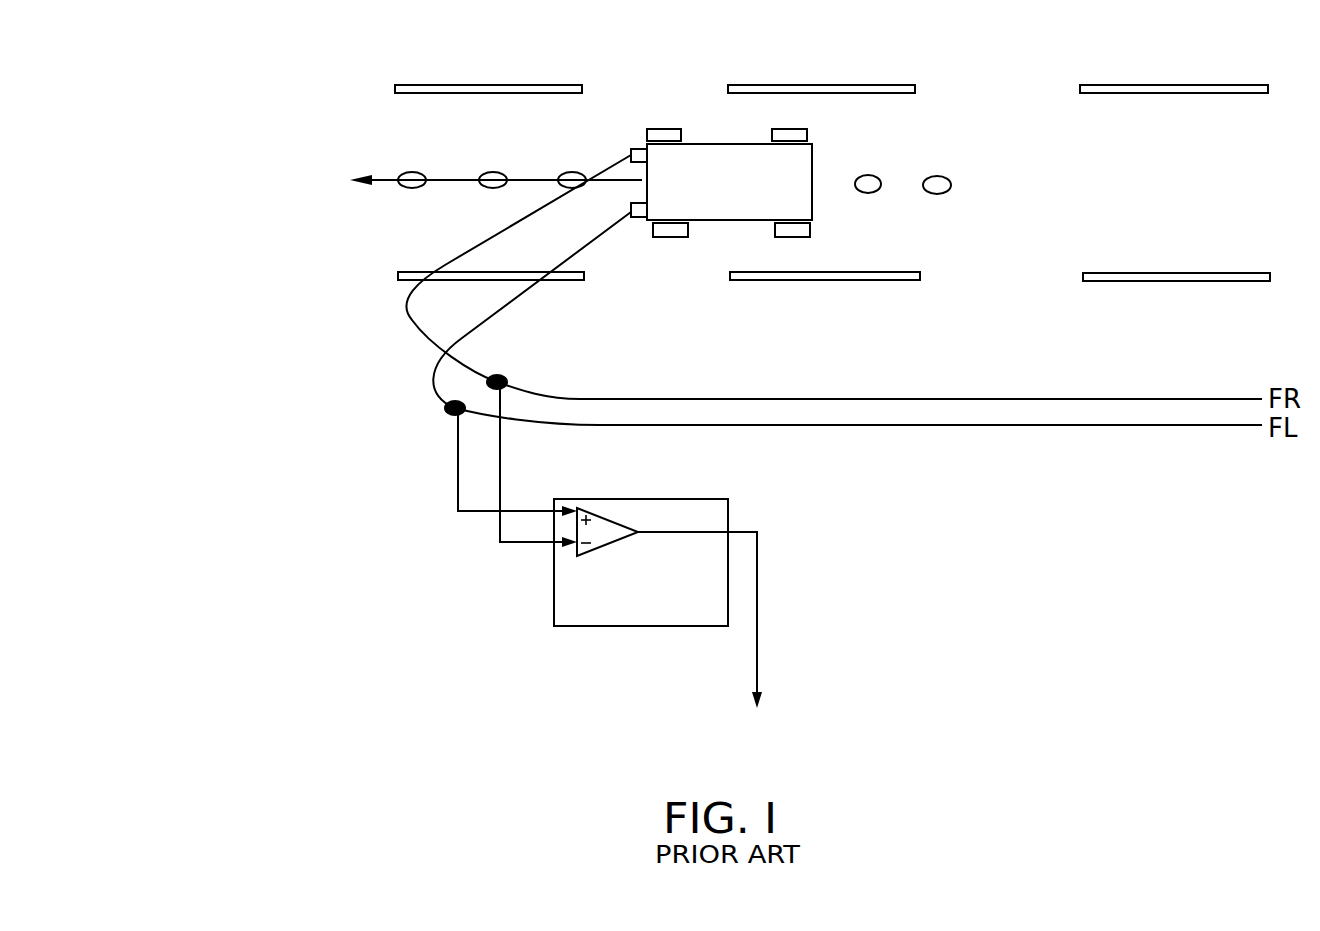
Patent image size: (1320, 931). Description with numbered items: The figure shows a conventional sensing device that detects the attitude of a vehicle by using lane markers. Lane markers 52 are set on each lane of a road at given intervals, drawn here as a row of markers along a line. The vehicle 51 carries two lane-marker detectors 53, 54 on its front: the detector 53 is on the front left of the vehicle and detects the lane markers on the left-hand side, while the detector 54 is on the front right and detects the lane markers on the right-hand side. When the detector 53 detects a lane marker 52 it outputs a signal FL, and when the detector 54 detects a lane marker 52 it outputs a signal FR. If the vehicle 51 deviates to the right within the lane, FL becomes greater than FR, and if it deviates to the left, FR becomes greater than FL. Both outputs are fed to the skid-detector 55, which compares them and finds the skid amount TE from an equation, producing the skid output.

The vehicle 51 is at (747, 183).
The lane markers 52 is at (491, 188).
The lane-marker detector 53 is at (638, 218).
The lane-marker detector 54 is at (648, 156).
The skid-detector 55 is at (583, 627).